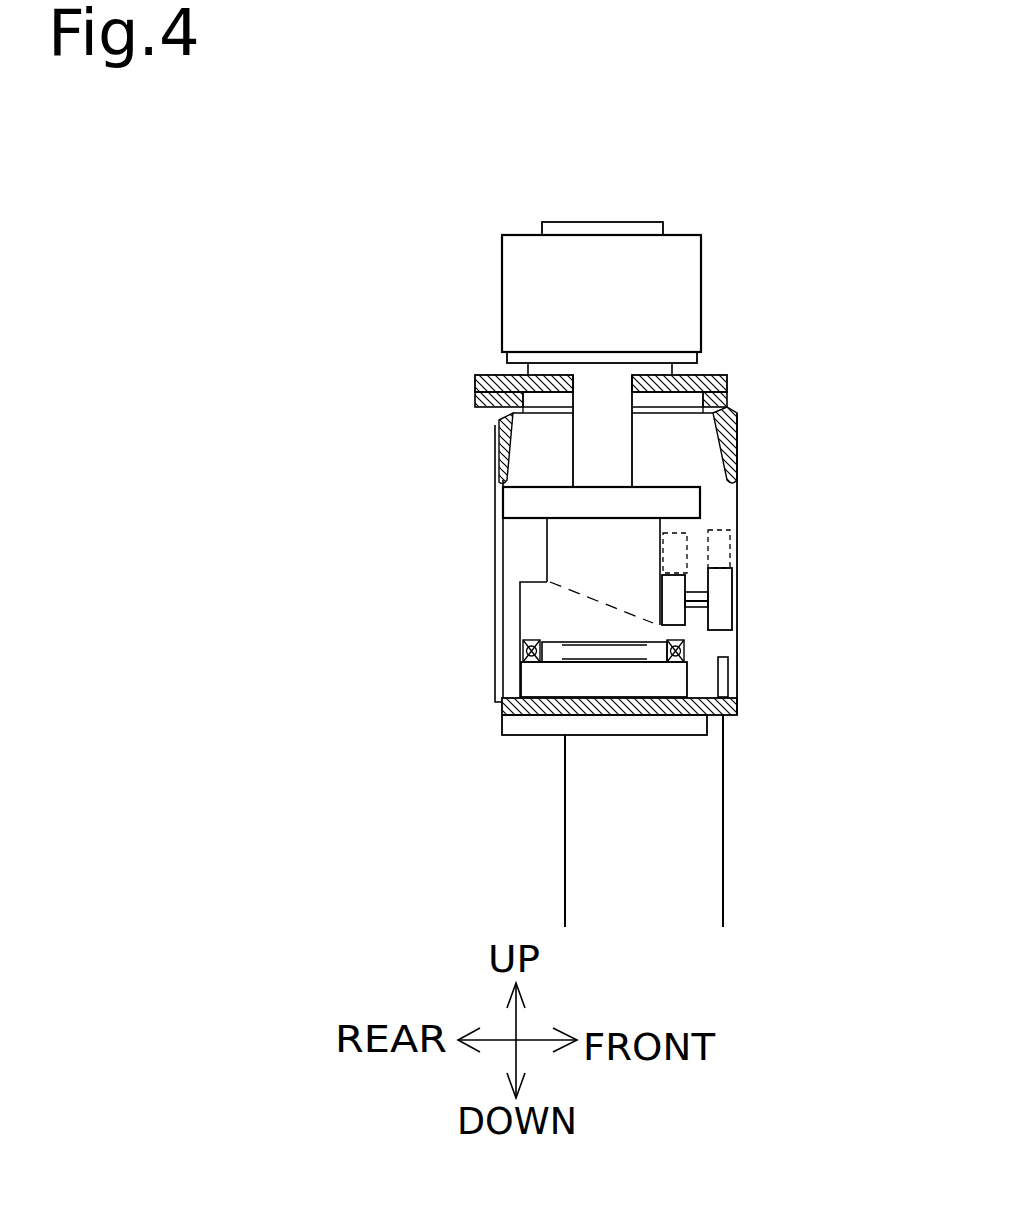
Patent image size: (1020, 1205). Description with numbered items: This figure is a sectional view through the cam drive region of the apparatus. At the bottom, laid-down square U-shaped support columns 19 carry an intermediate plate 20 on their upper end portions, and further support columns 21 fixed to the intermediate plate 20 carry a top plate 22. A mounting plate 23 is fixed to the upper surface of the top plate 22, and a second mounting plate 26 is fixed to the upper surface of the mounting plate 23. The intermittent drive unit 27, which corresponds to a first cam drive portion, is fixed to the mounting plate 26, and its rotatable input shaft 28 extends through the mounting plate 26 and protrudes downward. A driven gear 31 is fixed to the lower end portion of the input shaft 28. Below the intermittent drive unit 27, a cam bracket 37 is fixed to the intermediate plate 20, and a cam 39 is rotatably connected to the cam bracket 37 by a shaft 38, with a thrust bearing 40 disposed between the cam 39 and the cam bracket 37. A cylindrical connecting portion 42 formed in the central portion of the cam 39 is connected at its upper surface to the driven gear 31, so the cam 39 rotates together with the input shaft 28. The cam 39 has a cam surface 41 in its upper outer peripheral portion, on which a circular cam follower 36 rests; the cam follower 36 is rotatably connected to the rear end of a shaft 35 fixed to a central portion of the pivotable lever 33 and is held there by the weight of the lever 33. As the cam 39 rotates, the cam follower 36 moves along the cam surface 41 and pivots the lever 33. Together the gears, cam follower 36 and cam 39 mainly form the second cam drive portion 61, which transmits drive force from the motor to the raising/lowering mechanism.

The support column 19 is at (565, 880).
The intermediate plate 20 is at (737, 705).
The support column 21 is at (737, 510).
The top plate 22 is at (735, 407).
The mounting plate 23 is at (477, 402).
The mounting plate 26 is at (485, 376).
The intermittent drive unit 27 is at (695, 233).
The input shaft 28 is at (633, 447).
The driven gear 31 is at (682, 487).
The lever 33 is at (717, 565).
The shaft 35 is at (690, 583).
The cam follower 36 is at (673, 573).
The cam bracket 37 is at (518, 678).
The shaft 38 is at (603, 650).
The cam 39 is at (520, 582).
The thrust bearing 40 is at (527, 648).
The cam surface 41 is at (667, 620).
The connecting portion 42 is at (547, 555).
The second cam drive portion 61 is at (493, 502).